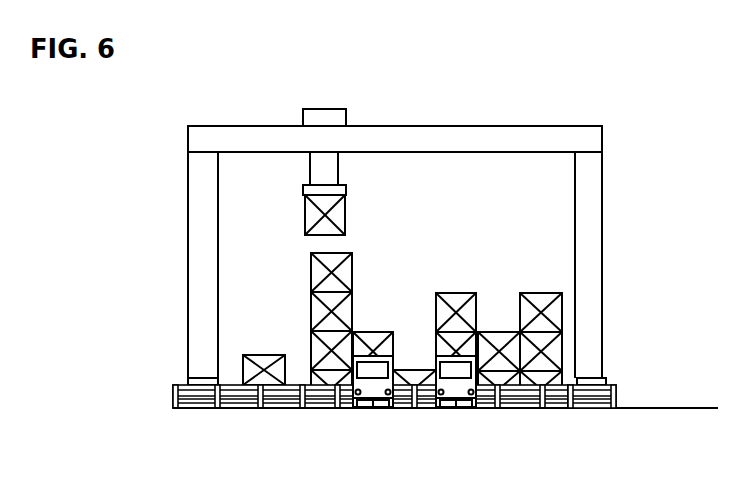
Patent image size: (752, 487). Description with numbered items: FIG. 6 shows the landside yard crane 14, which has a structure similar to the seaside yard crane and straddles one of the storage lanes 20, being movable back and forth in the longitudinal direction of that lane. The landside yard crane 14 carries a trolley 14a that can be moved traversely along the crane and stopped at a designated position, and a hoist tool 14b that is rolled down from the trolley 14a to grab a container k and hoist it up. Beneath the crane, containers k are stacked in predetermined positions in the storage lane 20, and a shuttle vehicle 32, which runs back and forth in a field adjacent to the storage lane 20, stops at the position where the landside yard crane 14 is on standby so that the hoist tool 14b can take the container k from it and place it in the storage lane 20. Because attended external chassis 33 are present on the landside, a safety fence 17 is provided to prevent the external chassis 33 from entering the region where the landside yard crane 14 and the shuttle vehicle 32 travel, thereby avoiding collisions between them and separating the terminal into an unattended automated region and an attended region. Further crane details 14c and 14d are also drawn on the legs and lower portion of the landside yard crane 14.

The landside yard crane 14 is at (550, 102).
The trolley 14a is at (323, 117).
The hoist tool 14b is at (326, 190).
The leg 14c is at (195, 378).
The guide member 14d is at (312, 365).
The safety fence 17 is at (590, 380).
The storage lane 20 is at (463, 268).
The container k is at (450, 300).
The shuttle vehicle 32 is at (263, 410).
The external chassis 33 is at (366, 410).